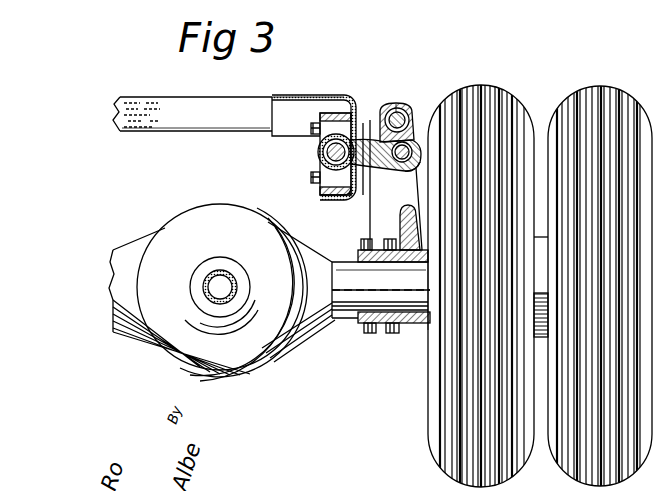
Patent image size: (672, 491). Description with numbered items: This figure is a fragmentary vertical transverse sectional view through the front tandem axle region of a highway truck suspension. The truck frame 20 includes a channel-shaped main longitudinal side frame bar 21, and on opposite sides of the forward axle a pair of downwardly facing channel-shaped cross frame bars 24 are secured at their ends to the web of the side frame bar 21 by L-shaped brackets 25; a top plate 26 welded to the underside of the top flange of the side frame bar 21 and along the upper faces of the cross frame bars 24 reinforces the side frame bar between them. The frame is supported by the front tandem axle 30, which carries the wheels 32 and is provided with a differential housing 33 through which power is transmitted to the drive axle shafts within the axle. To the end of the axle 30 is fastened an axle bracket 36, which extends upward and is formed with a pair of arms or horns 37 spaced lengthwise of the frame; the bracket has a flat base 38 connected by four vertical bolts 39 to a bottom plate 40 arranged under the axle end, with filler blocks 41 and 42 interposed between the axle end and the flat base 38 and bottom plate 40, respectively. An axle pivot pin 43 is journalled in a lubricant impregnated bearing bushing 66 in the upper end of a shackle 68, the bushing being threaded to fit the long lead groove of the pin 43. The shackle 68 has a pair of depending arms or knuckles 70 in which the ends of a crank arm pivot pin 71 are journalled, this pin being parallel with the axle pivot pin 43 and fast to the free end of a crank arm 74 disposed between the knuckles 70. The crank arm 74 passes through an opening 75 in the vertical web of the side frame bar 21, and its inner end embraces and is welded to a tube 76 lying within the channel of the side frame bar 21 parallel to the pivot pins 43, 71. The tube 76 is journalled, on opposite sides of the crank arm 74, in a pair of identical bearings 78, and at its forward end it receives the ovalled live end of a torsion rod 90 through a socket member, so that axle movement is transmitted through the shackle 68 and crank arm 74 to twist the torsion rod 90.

The frame 20 is at (141, 97).
The cross frame bars 24 is at (158, 126).
The L-shaped brackets 25 is at (274, 124).
The top plate 26 is at (284, 96).
The main longitudinal side frame bars 21 is at (331, 94).
The bearings 78 is at (318, 192).
The torsion rod 90 is at (327, 152).
The tube 76 is at (321, 158).
The arms or knuckles 70 is at (410, 134).
The crank arm pivot pin 71 is at (412, 152).
The crank arm 74 is at (422, 165).
The shackle 68 is at (417, 110).
The bearing bushing 66 is at (406, 112).
The axle pivot pin 43 is at (399, 104).
The opening 75 is at (366, 122).
The axle bracket 36 is at (372, 220).
The arms or horns 37 is at (397, 227).
The vertical bolts 39 is at (378, 237).
The flat base 38 is at (364, 250).
The front tandem axle 30 is at (381, 290).
The filler block 41 is at (392, 262).
The bottom plate 40 is at (421, 325).
The filler block 42 is at (358, 318).
The differential housing 33 is at (246, 366).
The wheels 32 is at (570, 90).